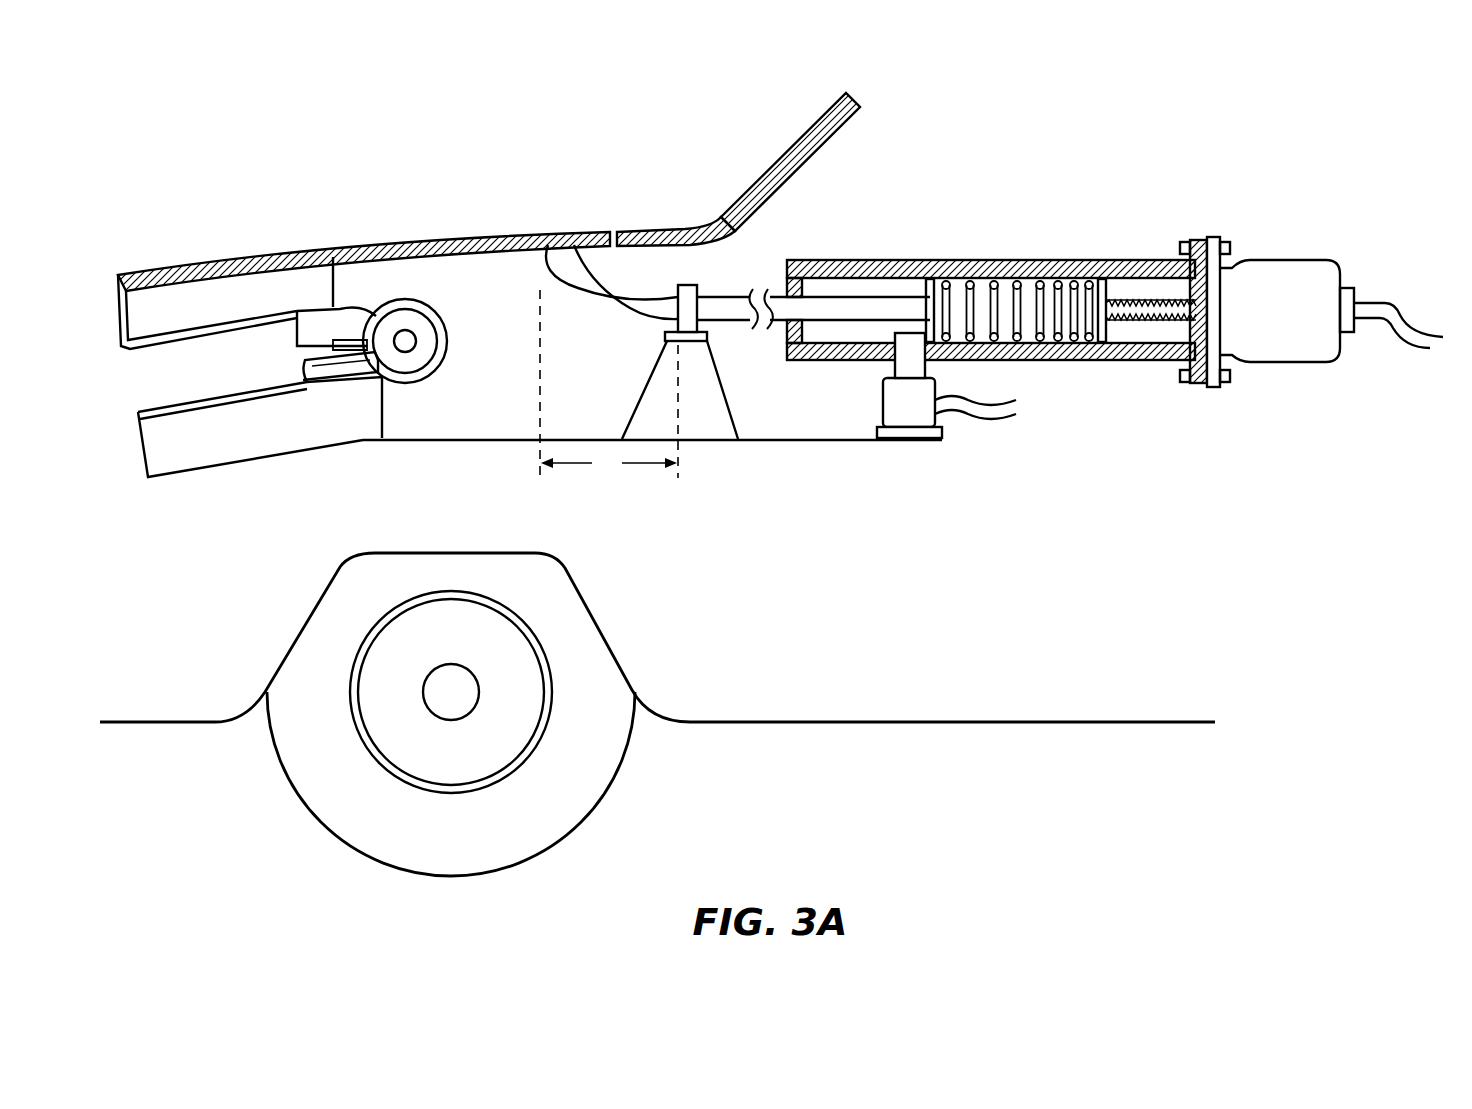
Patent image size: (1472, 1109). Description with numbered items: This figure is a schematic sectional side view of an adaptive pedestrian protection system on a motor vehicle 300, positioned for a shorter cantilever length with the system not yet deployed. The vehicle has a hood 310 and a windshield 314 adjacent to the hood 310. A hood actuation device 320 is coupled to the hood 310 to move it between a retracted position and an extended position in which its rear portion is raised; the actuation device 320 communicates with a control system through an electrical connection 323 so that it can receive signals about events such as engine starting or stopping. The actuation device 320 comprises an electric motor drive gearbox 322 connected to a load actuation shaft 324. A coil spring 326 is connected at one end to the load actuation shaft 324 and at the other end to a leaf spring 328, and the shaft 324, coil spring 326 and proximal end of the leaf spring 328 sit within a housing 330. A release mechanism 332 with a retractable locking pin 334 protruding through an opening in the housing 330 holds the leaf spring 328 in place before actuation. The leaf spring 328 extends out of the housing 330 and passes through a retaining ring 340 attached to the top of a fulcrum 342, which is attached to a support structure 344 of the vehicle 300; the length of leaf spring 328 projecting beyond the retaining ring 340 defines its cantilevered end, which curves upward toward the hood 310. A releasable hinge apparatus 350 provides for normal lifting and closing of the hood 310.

The motor vehicle 300 is at (348, 164).
The hood 310 is at (500, 227).
The windshield 314 is at (793, 147).
The hood actuation device 320 is at (1040, 187).
The electric motor drive gearbox 322 is at (1277, 272).
The electrical connection 323 is at (1387, 340).
The load actuation shaft 324 is at (1150, 360).
The coil spring 326 is at (1077, 362).
The leaf spring 328 is at (883, 302).
The housing 330 is at (1080, 260).
The release mechanism 332 is at (588, 274).
The retractable locking pin 334 is at (912, 358).
The retaining ring 340 is at (700, 288).
The fulcrum 342 is at (685, 425).
The support structure 344 is at (492, 448).
The releasable hinge apparatus 350 is at (347, 367).